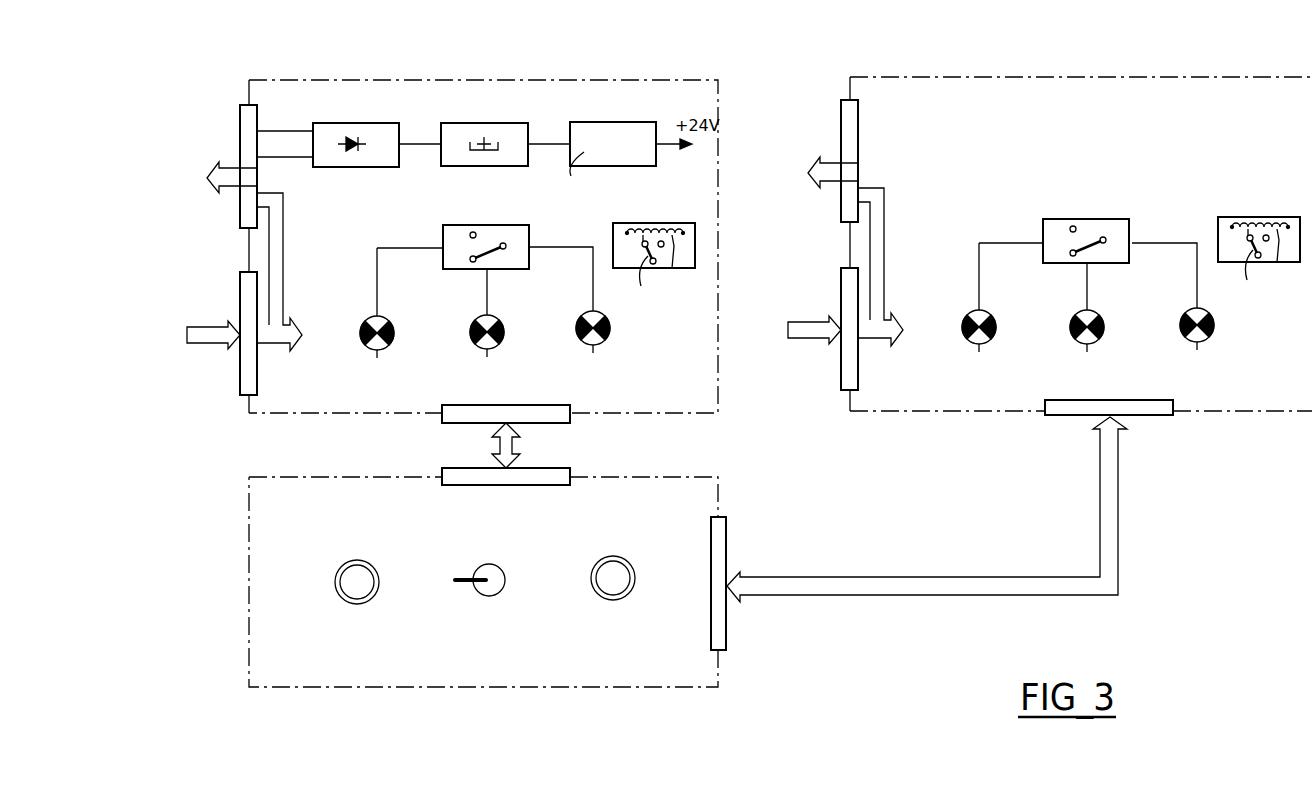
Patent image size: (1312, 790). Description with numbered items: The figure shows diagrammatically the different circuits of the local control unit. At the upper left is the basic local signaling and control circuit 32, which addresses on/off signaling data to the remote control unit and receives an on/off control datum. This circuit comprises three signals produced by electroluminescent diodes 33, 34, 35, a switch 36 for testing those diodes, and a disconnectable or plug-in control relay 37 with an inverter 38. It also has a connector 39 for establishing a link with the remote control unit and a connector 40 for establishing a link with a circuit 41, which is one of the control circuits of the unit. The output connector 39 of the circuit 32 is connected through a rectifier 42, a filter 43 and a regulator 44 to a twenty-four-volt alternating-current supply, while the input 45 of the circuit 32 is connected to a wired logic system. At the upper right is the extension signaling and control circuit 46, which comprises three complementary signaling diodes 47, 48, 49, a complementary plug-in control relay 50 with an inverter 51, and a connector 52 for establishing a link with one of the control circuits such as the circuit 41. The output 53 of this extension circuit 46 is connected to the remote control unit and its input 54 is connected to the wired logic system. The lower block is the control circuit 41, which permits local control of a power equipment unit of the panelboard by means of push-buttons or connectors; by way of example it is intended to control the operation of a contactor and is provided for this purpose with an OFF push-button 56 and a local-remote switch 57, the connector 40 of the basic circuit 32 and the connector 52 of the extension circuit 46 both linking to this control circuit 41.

The basic local signaling and control circuit 32 is at (566, 98).
The electroluminescent diode 33 is at (381, 324).
The electroluminescent diode 34 is at (488, 321).
The electroluminescent diode 35 is at (596, 341).
The switch 36 is at (529, 239).
The control relay 37 is at (674, 250).
The inverter 38 is at (631, 284).
The connector 39 is at (248, 141).
The connector 40 is at (496, 412).
The control circuit 41 is at (660, 503).
The rectifier 42 is at (377, 137).
The filter 43 is at (509, 133).
The regulator 44 is at (617, 139).
The input 45 is at (246, 312).
The extension signaling and control circuit 46 is at (1150, 113).
The complementary signaling diode 47 is at (983, 338).
The complementary signaling diode 48 is at (1087, 340).
The complementary signaling diode 49 is at (1195, 338).
The complementary plug-in control relay 50 is at (1279, 244).
The inverter 51 is at (1243, 277).
The connector 52 is at (1143, 410).
The output 53 is at (852, 129).
The input 54 is at (851, 365).
The OFF push-button 56 is at (353, 585).
The local-remote switch 57 is at (492, 585).